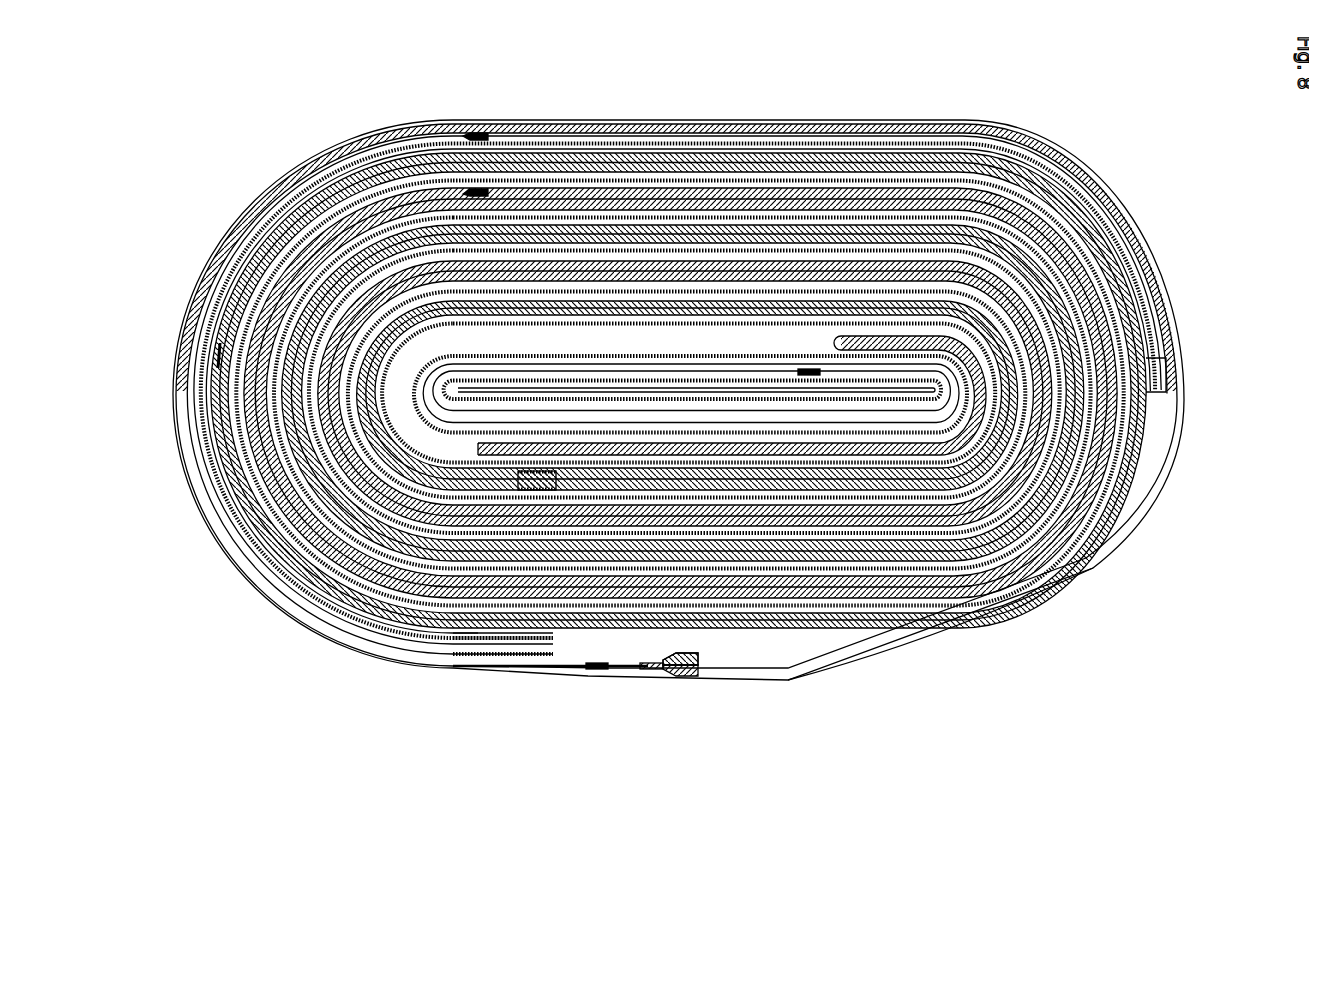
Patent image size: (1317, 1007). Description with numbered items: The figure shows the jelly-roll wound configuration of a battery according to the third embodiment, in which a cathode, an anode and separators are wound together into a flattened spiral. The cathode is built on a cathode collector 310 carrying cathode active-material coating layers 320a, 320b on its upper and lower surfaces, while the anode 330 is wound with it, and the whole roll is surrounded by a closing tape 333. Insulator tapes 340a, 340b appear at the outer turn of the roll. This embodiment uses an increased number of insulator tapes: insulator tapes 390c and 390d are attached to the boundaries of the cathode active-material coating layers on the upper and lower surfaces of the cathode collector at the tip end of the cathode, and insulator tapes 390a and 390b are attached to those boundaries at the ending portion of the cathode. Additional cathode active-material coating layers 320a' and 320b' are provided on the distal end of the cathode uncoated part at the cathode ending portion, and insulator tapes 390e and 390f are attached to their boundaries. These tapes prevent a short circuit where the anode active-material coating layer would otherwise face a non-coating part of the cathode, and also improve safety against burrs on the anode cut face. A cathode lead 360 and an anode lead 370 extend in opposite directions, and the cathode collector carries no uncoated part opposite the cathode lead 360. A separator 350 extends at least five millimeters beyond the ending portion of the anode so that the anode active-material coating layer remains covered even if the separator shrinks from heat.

The first electrode plate 310 is at (677, 190).
The second electrode plate coated portion 320a is at (683, 312).
The second electrode plate uncoated portion 320b is at (678, 345).
The cathode active-material coating layer 320a' is at (731, 654).
The cathode active-material coating layer 320b' is at (701, 707).
The separator 330 is at (1180, 398).
The closing tape 333 is at (902, 650).
The first insulating tape 340a is at (1175, 318).
The second insulating tape 340b is at (1160, 362).
The separator 350 is at (522, 636).
The cathode lead 360 is at (590, 663).
The anode lead 370 is at (795, 362).
The insulator tape 390a is at (333, 215).
The insulator tape 390b is at (388, 122).
The insulator tape 390c is at (508, 465).
The insulator tape 390d is at (462, 500).
The insulator tape 390e is at (655, 651).
The insulator tape 390f is at (645, 664).